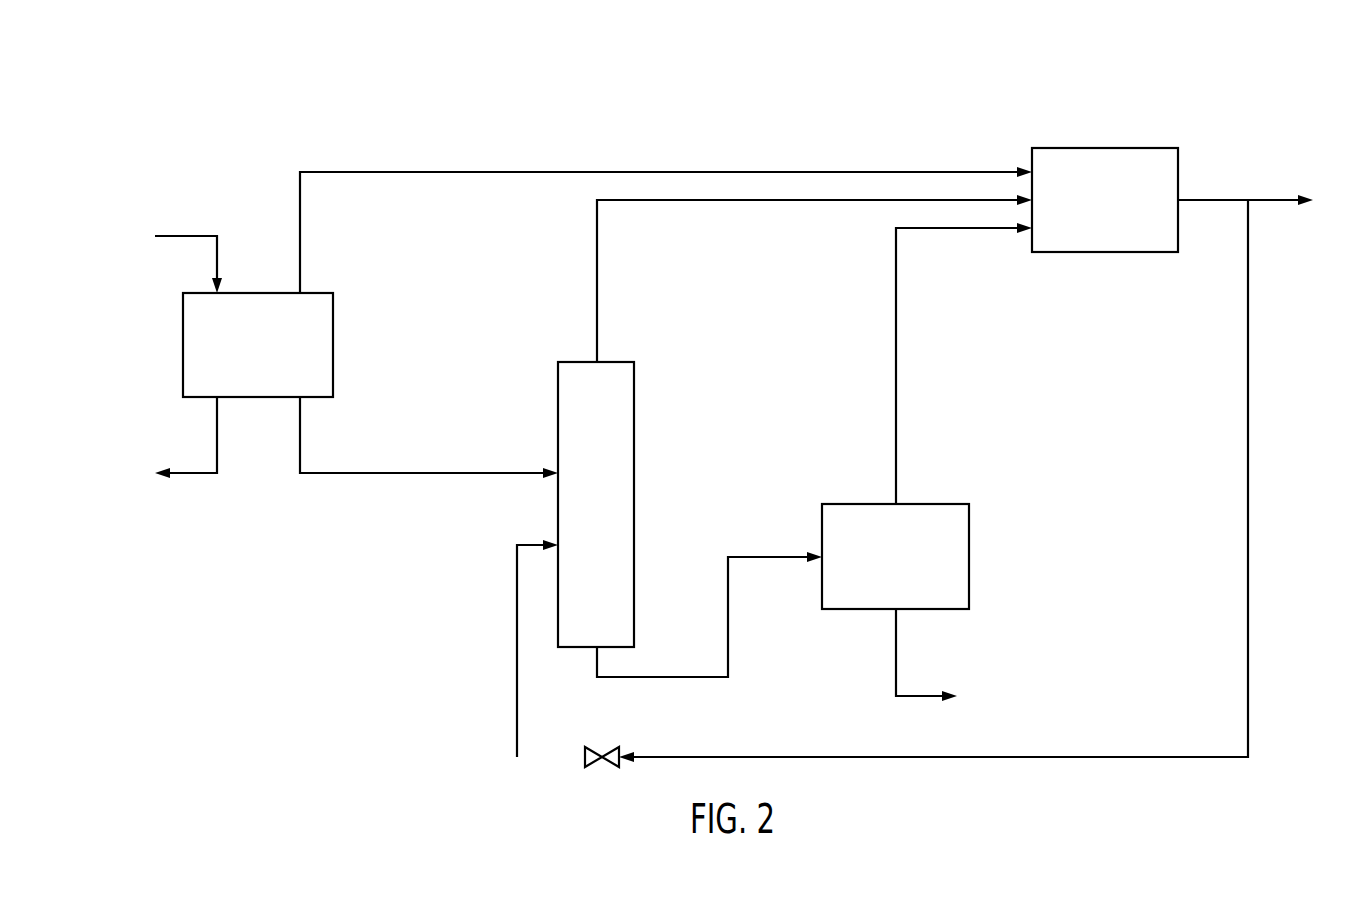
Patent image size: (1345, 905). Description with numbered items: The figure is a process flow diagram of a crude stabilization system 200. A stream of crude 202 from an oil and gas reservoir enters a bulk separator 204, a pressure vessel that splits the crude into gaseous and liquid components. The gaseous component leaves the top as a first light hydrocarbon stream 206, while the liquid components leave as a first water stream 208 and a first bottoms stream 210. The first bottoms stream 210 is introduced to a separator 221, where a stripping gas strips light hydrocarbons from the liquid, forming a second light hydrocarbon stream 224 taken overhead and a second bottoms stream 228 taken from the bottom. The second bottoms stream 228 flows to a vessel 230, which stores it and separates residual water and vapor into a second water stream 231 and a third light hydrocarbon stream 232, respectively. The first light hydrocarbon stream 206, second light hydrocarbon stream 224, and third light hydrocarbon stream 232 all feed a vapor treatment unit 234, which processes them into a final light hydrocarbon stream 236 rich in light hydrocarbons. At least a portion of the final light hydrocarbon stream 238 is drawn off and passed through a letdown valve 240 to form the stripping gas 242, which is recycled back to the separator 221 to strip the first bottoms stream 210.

The system 200 is at (252, 110).
The stream of crude 202 is at (186, 234).
The bulk separator 204 is at (333, 345).
The first light hydrocarbon stream 206 is at (302, 233).
The first water stream 208 is at (192, 478).
The first bottoms stream 210 is at (302, 435).
The separator 221 is at (634, 505).
The second light hydrocarbon stream 224 is at (598, 282).
The second bottoms stream 228 is at (685, 676).
The vessel 230 is at (969, 558).
The second water stream 231 is at (926, 694).
The third light hydrocarbon stream 232 is at (897, 368).
The vapor treatment unit 234 is at (1105, 253).
The final light hydrocarbon stream 236 is at (1213, 198).
The portion of the final light hydrocarbon stream 238 is at (1048, 755).
The letdown valve 240 is at (602, 753).
The stripping gas 242 is at (515, 697).